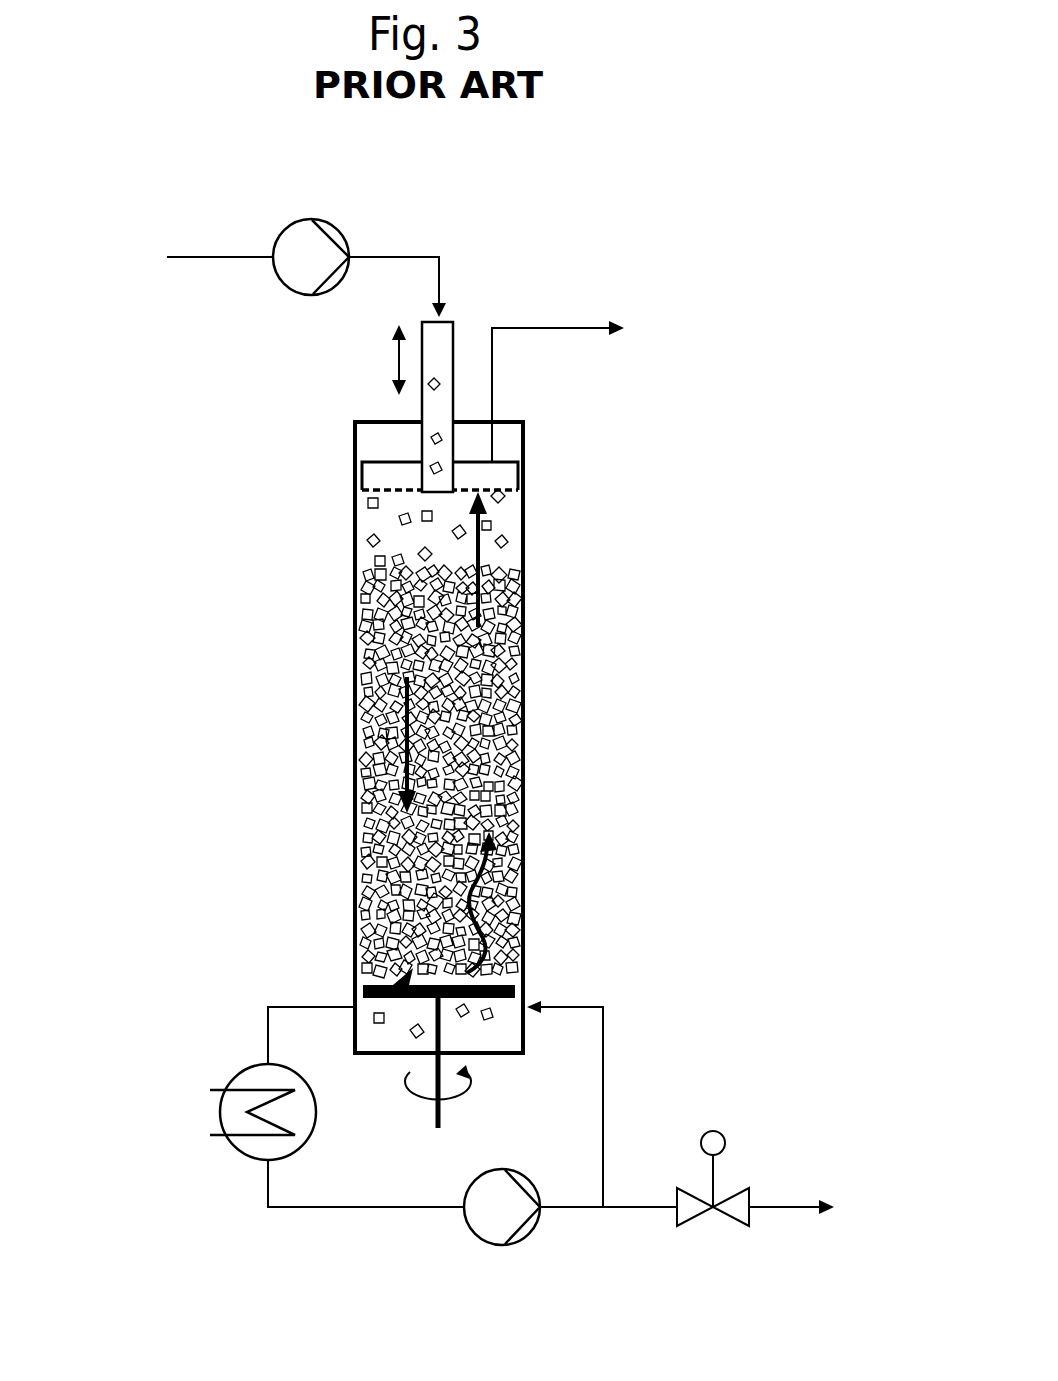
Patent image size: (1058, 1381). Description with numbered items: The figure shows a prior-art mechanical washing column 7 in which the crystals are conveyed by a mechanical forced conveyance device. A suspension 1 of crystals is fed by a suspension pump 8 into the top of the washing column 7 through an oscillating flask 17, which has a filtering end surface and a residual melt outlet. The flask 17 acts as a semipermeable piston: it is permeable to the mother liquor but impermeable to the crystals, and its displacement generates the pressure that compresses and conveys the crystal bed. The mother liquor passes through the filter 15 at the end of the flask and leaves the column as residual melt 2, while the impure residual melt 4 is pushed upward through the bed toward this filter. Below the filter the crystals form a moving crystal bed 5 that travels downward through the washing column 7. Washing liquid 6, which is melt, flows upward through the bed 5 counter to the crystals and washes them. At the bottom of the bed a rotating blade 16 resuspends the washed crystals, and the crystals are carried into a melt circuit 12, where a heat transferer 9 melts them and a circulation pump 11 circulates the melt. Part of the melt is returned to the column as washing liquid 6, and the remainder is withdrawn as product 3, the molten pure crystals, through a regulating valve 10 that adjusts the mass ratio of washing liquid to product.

The suspension 1 is at (202, 257).
The residual melt 2 is at (578, 381).
The product 3 is at (809, 1200).
The impure residual melt 4 is at (480, 538).
The moving crystal bed 5 is at (355, 780).
The washing liquid 6 is at (527, 857).
The washing column 7 is at (355, 557).
The suspension pump 8 is at (292, 278).
The heat transferer 9 is at (252, 1147).
The regulating valve 10 is at (738, 1208).
The circulation pump 11 is at (500, 1212).
The melt circuit 12 is at (347, 1207).
The filter 15 is at (397, 493).
The rotating blade 16 is at (355, 982).
The oscillating flask 17 is at (472, 473).